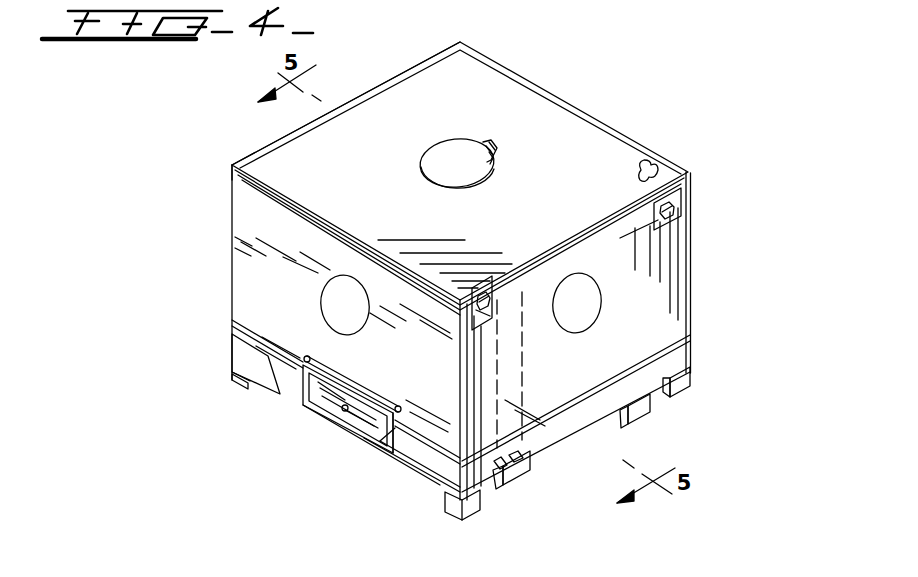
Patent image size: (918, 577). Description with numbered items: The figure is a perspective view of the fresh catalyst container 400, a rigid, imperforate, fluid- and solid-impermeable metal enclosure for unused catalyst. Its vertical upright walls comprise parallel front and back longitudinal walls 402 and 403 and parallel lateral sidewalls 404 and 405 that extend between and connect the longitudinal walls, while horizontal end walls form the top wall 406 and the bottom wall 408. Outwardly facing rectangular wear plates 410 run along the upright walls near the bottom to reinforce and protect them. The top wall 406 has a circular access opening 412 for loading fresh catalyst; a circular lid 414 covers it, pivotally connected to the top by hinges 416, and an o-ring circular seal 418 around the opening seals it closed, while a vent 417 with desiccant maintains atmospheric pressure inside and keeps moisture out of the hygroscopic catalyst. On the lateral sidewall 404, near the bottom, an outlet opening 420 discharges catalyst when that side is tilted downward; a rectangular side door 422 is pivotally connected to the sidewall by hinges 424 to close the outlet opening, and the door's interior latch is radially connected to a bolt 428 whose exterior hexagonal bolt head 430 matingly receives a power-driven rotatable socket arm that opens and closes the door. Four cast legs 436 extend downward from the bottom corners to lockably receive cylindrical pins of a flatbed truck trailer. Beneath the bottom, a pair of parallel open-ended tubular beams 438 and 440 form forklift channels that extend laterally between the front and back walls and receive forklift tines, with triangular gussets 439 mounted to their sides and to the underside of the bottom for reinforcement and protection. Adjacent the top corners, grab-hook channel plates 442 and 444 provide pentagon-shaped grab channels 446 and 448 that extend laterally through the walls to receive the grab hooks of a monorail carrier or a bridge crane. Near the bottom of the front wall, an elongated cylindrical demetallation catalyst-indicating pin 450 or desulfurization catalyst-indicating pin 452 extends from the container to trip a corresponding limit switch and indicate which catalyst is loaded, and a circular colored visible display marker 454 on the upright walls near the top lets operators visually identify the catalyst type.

The fresh catalyst container 400 is at (699, 161).
The front longitudinal wall 402 is at (692, 272).
The back longitudinal wall 403 is at (420, 50).
The lateral sidewall 404 is at (238, 320).
The lateral sidewall 405 is at (562, 98).
The top wall 406 is at (313, 190).
The bottom wall 408 is at (392, 468).
The wear plates 410 is at (665, 346).
The access opening 412 is at (492, 188).
The lid 414 is at (456, 138).
The hinges 416 is at (492, 148).
The vent 417 is at (644, 160).
The circular seal 418 is at (493, 162).
The outlet opening 420 is at (303, 392).
The side door 422 is at (392, 420).
The hinges 424 is at (394, 409).
The bolt 428 is at (342, 404).
The hexagonal bolt head 430 is at (344, 408).
The legs 436 is at (694, 379).
The tubular beam 438 is at (520, 494).
The gussets 439 is at (522, 478).
The tubular beam 440 is at (638, 416).
The grab-hook channel plate 442 is at (484, 298).
The grab-hook channel plate 444 is at (653, 220).
The grab channel 446 is at (487, 316).
The grab channel 448 is at (683, 216).
The demetallation catalyst-indicating pin 450 is at (497, 462).
The desulfurization catalyst-indicating pin 452 is at (520, 464).
The visible display marker 454 is at (320, 298).